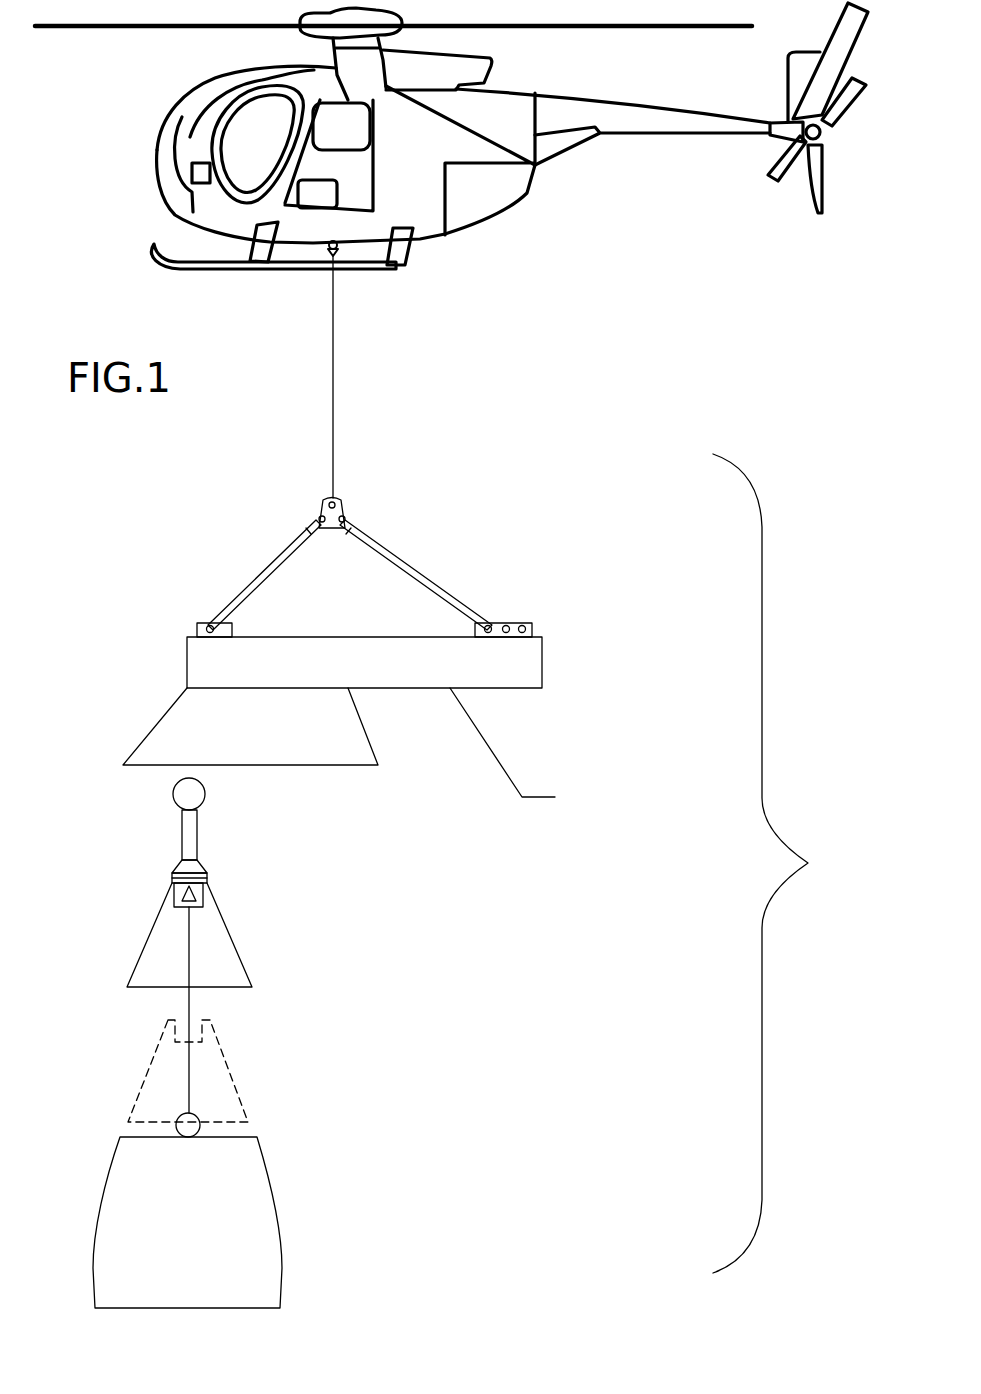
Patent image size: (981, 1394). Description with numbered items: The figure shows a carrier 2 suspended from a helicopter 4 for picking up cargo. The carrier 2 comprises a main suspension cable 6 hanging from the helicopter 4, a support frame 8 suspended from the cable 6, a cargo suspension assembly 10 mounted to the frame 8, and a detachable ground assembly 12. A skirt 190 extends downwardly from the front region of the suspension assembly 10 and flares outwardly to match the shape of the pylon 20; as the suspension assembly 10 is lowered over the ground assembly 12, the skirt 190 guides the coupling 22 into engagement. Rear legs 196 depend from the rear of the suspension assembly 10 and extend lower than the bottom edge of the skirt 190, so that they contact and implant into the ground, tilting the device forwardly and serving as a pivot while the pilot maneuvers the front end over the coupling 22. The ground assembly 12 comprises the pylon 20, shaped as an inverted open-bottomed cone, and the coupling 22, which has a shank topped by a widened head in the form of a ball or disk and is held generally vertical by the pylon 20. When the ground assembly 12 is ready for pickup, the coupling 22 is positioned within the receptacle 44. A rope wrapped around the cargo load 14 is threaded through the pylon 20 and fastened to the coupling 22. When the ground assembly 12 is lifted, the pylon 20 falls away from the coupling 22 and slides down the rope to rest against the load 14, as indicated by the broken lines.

The carrier 2 is at (778, 863).
The helicopter 4 is at (508, 228).
The main suspension cable 6 is at (332, 398).
The support frame 8 is at (270, 563).
The cargo suspension assembly 10 is at (389, 648).
The ground assembly 12 is at (254, 957).
The cargo load 14 is at (275, 1250).
The pylon 20 is at (140, 955).
The coupling 22 is at (213, 832).
The receptacle 44 is at (173, 898).
The skirt 190 is at (153, 733).
The rear legs 196 is at (503, 763).